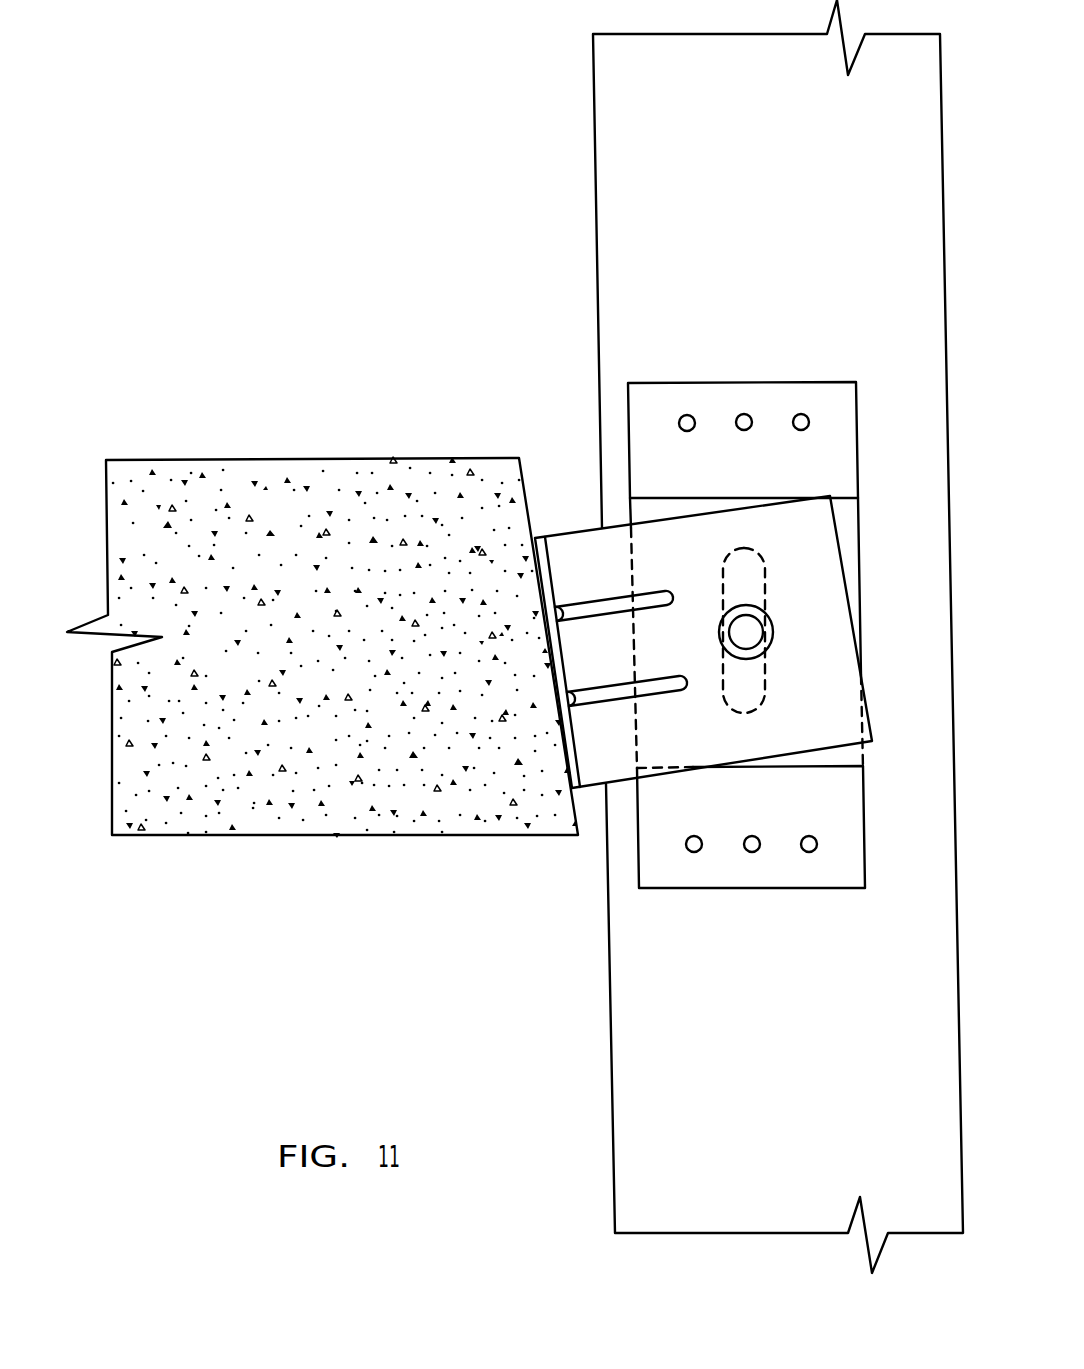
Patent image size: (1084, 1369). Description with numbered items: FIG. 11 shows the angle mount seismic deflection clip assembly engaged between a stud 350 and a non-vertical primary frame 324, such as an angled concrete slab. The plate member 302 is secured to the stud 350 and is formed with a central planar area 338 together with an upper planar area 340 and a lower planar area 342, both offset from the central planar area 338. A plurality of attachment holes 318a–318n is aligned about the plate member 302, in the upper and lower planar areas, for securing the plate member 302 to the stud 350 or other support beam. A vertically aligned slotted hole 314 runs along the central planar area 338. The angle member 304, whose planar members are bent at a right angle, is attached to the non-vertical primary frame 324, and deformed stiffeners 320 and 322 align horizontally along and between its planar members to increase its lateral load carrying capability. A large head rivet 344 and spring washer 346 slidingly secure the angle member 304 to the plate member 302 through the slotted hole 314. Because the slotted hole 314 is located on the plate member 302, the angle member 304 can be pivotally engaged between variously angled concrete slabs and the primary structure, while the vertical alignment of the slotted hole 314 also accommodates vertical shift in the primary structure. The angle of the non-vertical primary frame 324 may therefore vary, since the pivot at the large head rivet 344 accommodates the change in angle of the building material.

The plate member 302 is at (862, 449).
The angle member 304 is at (567, 521).
The slotted hole 314 is at (737, 717).
The attachment hole 318a is at (688, 414).
The attachment hole 318n is at (810, 852).
The deformed stiffener 320 is at (657, 595).
The deformed stiffener 322 is at (643, 686).
The non-vertical primary frame 324 is at (247, 484).
The central planar area 338 is at (848, 525).
The upper planar area 340 is at (743, 418).
The lower planar area 342 is at (751, 853).
The large head rivet 344 is at (748, 632).
The spring washer 346 is at (773, 632).
The stud 350 is at (787, 293).